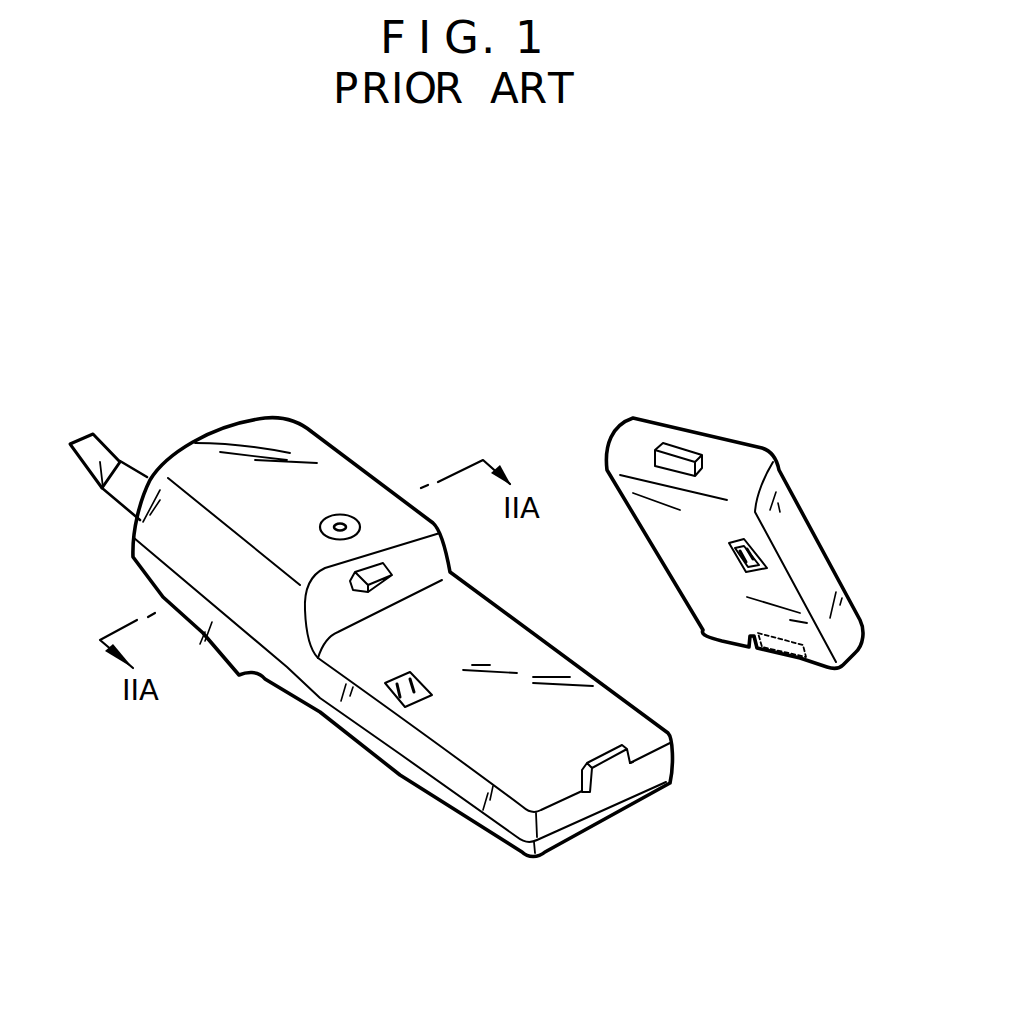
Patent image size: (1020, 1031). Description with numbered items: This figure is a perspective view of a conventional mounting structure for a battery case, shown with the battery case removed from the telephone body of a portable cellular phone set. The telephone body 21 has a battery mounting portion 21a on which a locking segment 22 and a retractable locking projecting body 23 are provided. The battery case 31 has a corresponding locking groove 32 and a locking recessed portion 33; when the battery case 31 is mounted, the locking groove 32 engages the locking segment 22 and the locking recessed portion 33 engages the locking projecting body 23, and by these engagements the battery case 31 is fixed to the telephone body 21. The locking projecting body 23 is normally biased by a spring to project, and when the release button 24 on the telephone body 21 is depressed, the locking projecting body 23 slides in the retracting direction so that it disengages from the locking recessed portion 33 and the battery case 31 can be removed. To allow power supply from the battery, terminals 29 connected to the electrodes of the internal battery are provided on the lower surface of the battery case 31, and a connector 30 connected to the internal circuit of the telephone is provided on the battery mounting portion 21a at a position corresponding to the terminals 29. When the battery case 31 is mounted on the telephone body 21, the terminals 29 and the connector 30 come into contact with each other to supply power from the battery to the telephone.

The telephone body 21 is at (338, 382).
The battery mounting portion 21a is at (503, 640).
The locking segment 22 is at (573, 775).
The locking projecting body 23 is at (318, 658).
The release button 24 is at (345, 514).
The terminals 29 is at (758, 563).
The connector 30 is at (390, 706).
The battery case 31 is at (773, 422).
The locking groove 32 is at (778, 655).
The locking recessed portion 33 is at (676, 457).